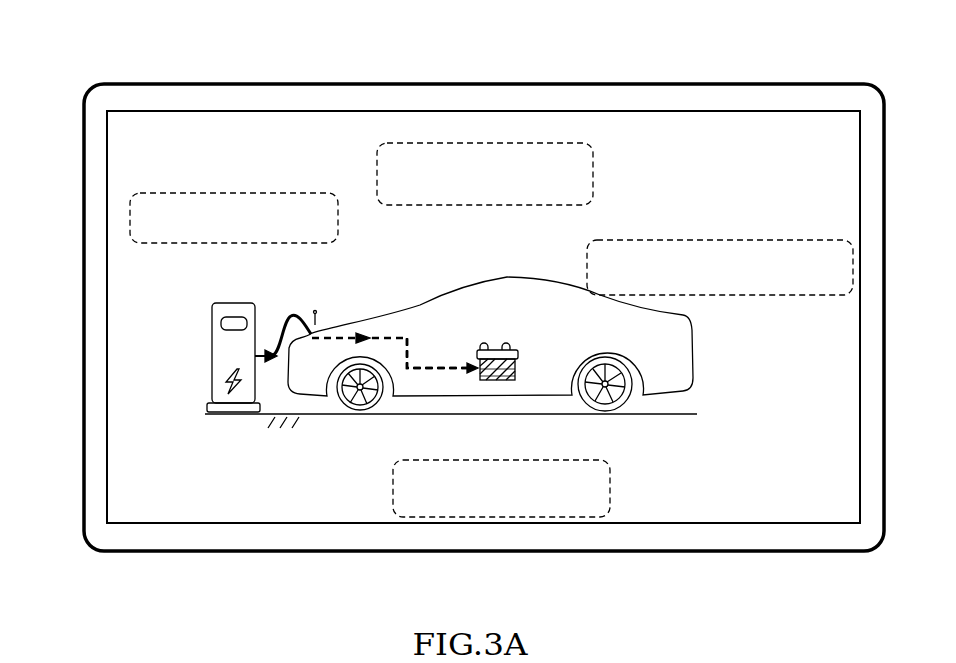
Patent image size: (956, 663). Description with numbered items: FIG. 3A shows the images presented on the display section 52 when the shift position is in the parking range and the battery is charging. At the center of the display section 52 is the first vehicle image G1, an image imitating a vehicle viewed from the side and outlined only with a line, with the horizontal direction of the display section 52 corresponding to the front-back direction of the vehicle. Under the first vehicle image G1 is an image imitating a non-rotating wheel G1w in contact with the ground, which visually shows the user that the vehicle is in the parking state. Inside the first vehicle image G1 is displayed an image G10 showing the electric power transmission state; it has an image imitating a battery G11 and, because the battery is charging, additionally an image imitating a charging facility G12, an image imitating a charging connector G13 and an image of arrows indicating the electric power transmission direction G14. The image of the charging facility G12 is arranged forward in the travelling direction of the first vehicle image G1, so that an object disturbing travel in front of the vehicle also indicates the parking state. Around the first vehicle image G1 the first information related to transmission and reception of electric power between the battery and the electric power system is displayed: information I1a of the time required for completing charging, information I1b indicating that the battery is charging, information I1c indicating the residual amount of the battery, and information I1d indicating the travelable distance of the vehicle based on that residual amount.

The display section 52 is at (637, 82).
The first vehicle image G1 is at (718, 360).
The image imitating a non-rotating wheel G1w is at (345, 405).
The image showing the electric power transmission state G10 is at (400, 328).
The image imitating a battery G11 is at (517, 352).
The image imitating a charging facility G12 is at (223, 357).
The image imitating a charging connector G13 is at (290, 318).
The image of arrows indicating an electric power transmission direction G14 is at (407, 372).
The information of time required for completing charging I1a is at (750, 240).
The information indicating charging or feeding state I1b is at (230, 193).
The information indicating a residual amount of the capacitor I1c is at (500, 518).
The information indicating a travelable distance I1d is at (470, 142).